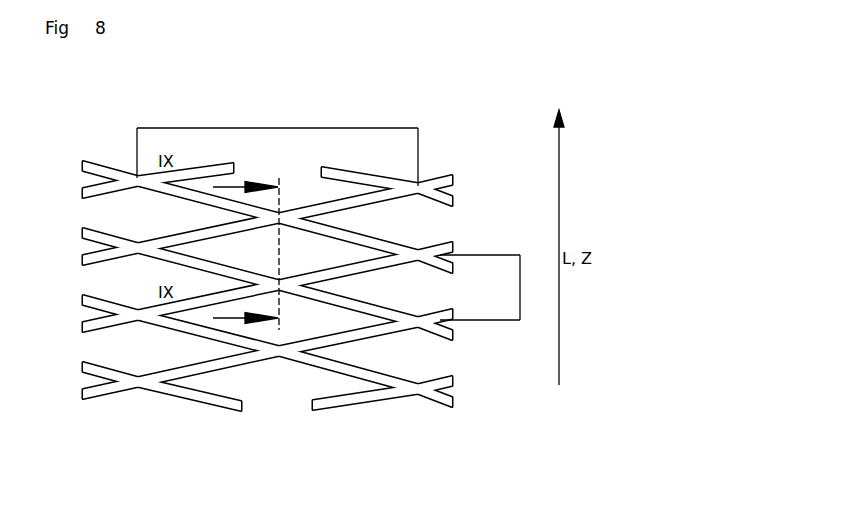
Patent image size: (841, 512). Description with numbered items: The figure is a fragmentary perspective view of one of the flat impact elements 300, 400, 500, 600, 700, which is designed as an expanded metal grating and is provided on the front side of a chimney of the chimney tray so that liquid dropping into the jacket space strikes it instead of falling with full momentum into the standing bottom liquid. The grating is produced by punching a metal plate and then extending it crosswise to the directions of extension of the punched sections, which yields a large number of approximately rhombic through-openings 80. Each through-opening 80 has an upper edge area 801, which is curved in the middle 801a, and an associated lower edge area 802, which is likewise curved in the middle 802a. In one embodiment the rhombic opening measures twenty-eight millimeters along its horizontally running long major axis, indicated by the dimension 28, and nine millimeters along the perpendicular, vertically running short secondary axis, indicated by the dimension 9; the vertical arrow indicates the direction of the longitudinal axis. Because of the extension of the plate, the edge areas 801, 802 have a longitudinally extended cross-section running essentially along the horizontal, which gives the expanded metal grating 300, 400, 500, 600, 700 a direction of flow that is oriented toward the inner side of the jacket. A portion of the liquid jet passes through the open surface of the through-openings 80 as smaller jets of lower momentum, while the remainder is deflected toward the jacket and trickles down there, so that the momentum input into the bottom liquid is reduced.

The through-openings 80 is at (267, 269).
The upper edge area 801 is at (221, 298).
The lower edge area 802 is at (240, 337).
The middle of upper edge area 801a is at (282, 284).
The middle of lower edge area 802a is at (279, 352).
The impact element 300 is at (395, 269).
The impact element 400 is at (395, 269).
The impact element 500 is at (395, 269).
The impact element 600 is at (395, 269).
The impact element 700 is at (395, 269).
The mesh width dimension 28 is at (277, 144).
The mesh height dimension 9 is at (480, 287).